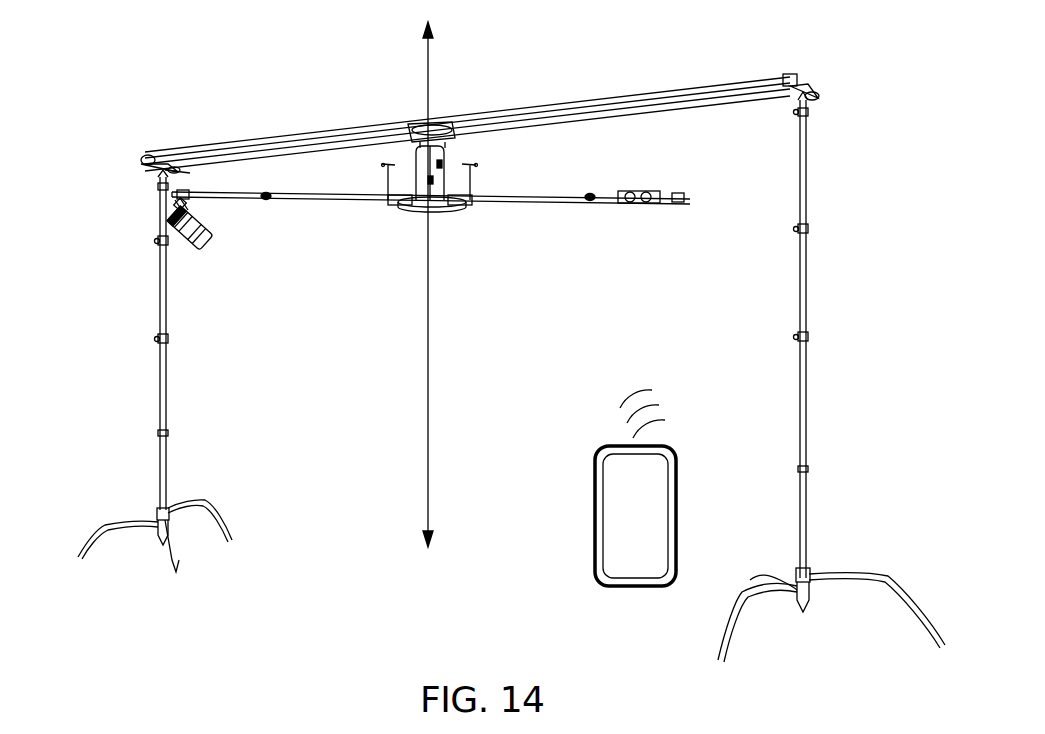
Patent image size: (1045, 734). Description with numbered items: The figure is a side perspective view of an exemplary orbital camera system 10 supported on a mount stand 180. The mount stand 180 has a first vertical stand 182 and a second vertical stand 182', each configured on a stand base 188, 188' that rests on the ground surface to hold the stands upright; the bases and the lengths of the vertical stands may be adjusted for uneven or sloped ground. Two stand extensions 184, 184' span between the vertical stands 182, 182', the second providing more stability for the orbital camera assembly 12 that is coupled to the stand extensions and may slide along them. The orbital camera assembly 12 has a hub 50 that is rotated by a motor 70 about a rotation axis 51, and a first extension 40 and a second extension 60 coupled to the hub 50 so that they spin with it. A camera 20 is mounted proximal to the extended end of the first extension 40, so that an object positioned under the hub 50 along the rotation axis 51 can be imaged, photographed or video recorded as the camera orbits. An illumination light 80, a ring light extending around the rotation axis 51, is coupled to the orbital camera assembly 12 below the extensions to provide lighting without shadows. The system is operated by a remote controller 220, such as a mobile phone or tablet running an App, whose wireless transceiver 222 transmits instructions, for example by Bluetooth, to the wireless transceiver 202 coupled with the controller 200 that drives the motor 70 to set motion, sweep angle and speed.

The orbital camera system 10 is at (104, 94).
The orbital camera assembly 12 is at (436, 130).
The camera 20 is at (204, 246).
The first extension 40 is at (324, 197).
The hub 50 is at (450, 208).
The rotation axis 51 is at (428, 425).
The second extension 60 is at (518, 200).
The motor 70 is at (440, 176).
The illumination light 80 is at (400, 206).
The mount stand 180 is at (831, 373).
The first vertical stand 182 is at (213, 340).
The second vertical stand 182' is at (844, 335).
The stand extension 184 is at (480, 100).
The stand extension 184' is at (385, 726).
The stand base 188 is at (207, 532).
The stand base 188' is at (831, 594).
The controller 200 is at (460, 138).
The wireless transceiver 202 is at (412, 168).
The remote controller 220 is at (600, 447).
The wireless transceiver 222 is at (676, 457).